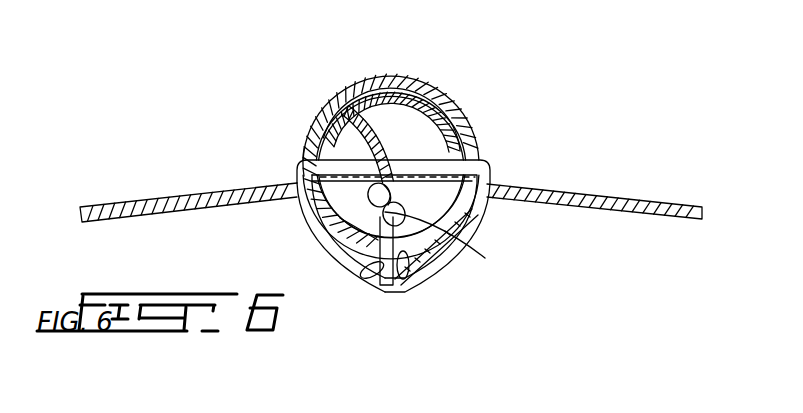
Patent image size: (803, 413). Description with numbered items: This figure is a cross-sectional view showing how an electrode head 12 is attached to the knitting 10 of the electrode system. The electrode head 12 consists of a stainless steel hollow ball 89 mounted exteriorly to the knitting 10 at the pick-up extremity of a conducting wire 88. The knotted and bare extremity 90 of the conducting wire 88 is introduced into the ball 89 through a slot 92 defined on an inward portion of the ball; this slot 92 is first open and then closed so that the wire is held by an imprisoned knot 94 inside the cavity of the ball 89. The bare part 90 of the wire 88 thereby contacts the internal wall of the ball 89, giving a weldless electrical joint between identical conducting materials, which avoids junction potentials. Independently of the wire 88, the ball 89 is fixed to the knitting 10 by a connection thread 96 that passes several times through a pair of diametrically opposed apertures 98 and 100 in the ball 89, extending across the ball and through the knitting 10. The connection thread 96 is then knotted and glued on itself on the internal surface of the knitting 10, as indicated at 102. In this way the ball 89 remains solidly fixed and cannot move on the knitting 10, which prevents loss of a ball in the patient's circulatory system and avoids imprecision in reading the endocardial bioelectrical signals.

The knitting 10 is at (604, 188).
The electrode head 12 is at (466, 104).
The conducting wire 88 is at (395, 285).
The hollow ball 89 is at (365, 77).
The knotted and bare extremity 90 is at (418, 92).
The slot 92 is at (430, 247).
The imprisoned knot 94 is at (385, 212).
The connection thread 96 is at (295, 207).
The aperture 98 is at (307, 152).
The aperture 100 is at (480, 152).
The knotted and glued connection thread 102 is at (368, 272).